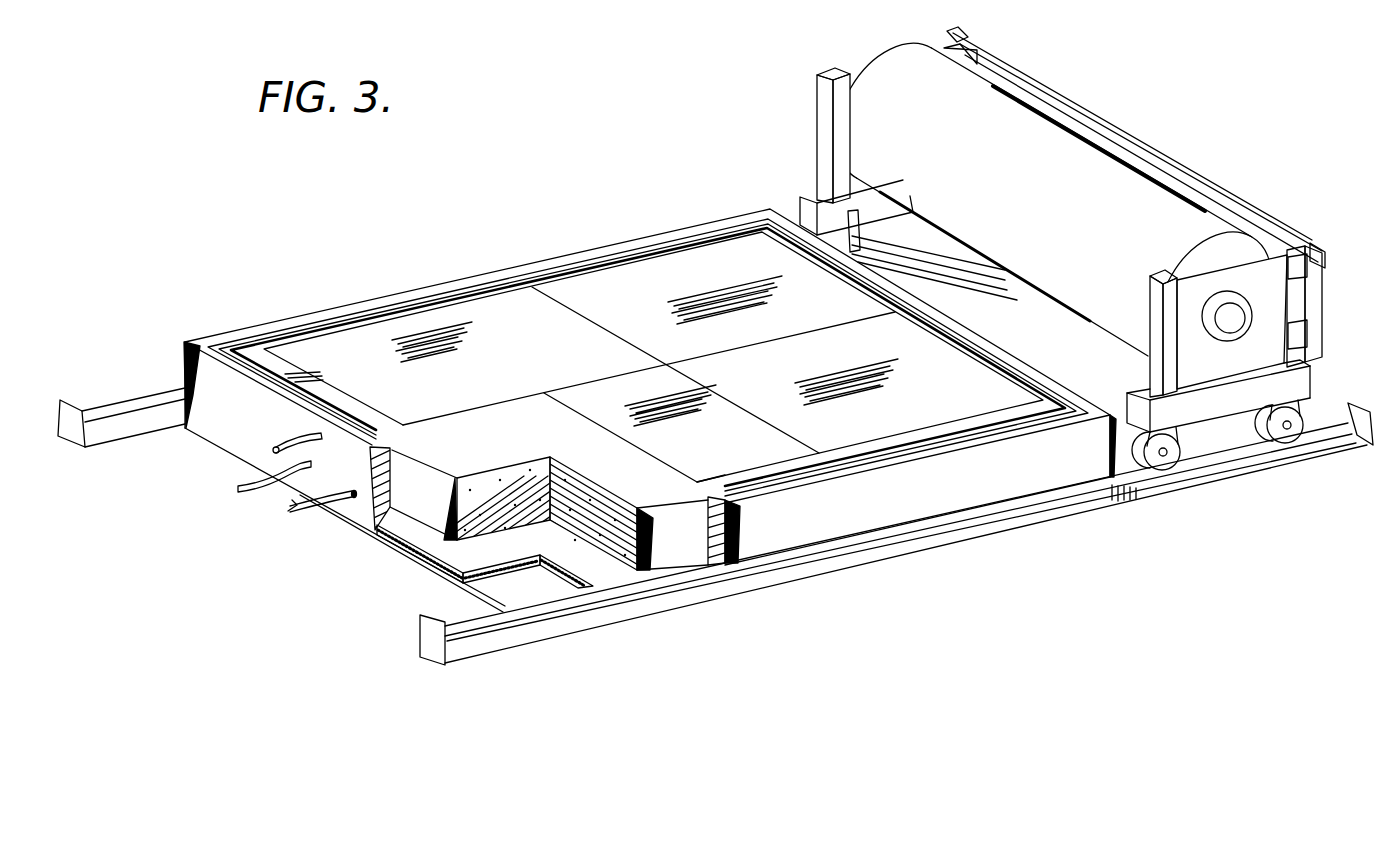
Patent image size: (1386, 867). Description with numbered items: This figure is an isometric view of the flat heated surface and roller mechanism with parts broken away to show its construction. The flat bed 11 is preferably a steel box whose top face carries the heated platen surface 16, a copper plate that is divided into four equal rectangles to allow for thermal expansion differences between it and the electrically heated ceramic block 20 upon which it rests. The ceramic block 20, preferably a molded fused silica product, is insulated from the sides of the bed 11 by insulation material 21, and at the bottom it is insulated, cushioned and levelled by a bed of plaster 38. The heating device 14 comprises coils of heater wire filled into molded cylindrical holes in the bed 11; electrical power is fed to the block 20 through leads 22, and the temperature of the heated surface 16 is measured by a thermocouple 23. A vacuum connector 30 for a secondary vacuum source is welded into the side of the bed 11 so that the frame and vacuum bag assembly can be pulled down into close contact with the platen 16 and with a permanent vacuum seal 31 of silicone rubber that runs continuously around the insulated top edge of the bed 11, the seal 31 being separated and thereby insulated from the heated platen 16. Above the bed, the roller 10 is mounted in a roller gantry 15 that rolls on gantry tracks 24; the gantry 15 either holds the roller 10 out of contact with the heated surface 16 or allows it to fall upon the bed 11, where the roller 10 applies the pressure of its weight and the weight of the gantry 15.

The roller 10 is at (888, 63).
The bed 11 is at (823, 530).
The heating device 14 is at (523, 473).
The roller gantry 15 is at (818, 110).
The heated platen surface 16 is at (495, 312).
The ceramic block 20 is at (680, 515).
The insulation 21 is at (395, 440).
The leads 22 is at (313, 503).
The thermocouple 23 is at (281, 482).
The gantry track 24 is at (157, 402).
The vacuum connector 30 is at (260, 459).
The permanent vacuum seal 31 is at (783, 486).
The bed of plaster 38 is at (435, 550).